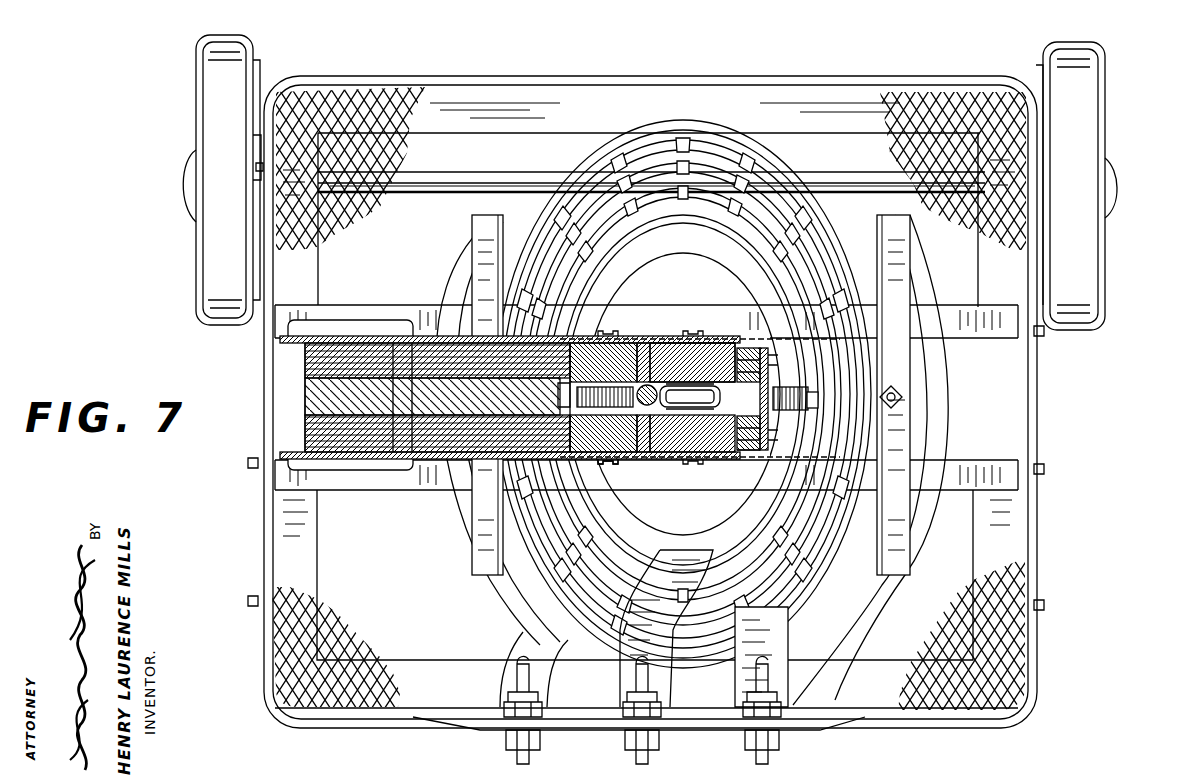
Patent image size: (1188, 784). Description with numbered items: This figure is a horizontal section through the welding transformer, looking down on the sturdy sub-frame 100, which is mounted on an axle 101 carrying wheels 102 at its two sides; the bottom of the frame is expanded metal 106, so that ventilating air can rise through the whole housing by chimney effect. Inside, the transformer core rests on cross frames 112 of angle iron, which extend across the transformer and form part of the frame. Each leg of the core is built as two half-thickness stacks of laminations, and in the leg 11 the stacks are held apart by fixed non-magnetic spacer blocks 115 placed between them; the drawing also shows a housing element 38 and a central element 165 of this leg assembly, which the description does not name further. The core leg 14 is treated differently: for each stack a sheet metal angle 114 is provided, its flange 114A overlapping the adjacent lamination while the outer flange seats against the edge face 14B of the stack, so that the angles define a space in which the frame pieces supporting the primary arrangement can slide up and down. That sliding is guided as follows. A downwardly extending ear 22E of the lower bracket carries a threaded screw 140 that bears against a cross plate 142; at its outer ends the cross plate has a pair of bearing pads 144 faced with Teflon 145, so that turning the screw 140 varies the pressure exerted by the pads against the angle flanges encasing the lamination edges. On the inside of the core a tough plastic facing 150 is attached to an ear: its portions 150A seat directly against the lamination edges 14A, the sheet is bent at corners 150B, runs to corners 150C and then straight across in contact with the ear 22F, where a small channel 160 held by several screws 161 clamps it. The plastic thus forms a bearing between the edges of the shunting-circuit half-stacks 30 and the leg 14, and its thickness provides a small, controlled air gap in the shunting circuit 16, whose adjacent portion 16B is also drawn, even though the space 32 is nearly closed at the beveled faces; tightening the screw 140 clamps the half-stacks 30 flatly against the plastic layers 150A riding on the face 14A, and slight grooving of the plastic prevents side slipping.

The sub-frame 100 is at (622, 92).
The axle 101 is at (440, 190).
The wheels 102 is at (240, 62).
The expanded metal 106 is at (368, 212).
The cross frames 112 is at (962, 320).
The coil housing 38 is at (338, 318).
The core leg 11 is at (302, 440).
The spacer blocks 115 is at (302, 393).
The screws 161 is at (522, 345).
The channel 160 is at (572, 345).
The core 165 is at (556, 405).
The plastic facing 150 is at (652, 338).
The plastic layer portions 150A is at (662, 378).
The corners 150B is at (641, 343).
The corners 150C is at (620, 343).
The half-stacks of shunting circuit 30 is at (632, 343).
The space 32 is at (577, 343).
The core leg 14 is at (708, 343).
The lamination edges 14A is at (660, 343).
The edge face 14B is at (737, 347).
The sheet metal angle 114 is at (707, 343).
The flange 114A is at (715, 394).
The cross plate 142 is at (760, 405).
The bearing pads 144 is at (748, 348).
The Teflon facing 145 is at (768, 373).
The screw 140 is at (812, 400).
The ear 22E is at (765, 365).
The shunting circuit 16 is at (556, 343).
The spacer 16B is at (750, 458).
The ear 22F is at (590, 452).